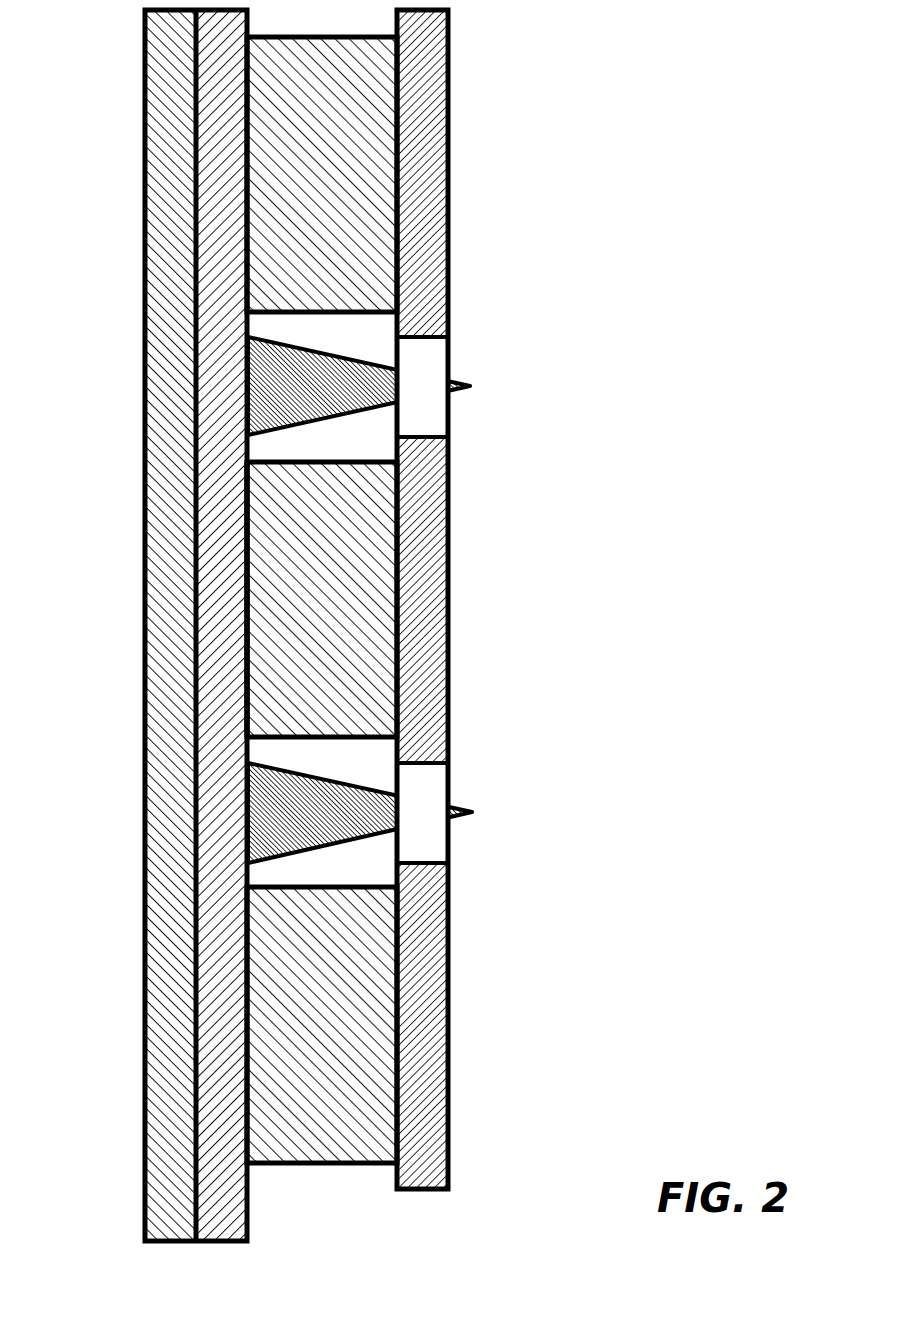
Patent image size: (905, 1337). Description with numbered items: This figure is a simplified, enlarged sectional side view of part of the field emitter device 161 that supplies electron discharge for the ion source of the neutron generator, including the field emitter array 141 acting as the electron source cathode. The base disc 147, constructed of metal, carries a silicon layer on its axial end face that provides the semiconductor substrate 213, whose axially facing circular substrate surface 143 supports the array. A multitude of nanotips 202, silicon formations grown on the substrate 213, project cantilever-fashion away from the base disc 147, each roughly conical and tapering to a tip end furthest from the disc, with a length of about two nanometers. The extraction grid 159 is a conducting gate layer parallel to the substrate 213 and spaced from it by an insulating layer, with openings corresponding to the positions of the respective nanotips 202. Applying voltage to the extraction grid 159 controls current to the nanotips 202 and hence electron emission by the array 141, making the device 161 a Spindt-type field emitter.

The field emitter array 141 is at (690, 584).
The substrate surface 143 is at (266, 549).
The base disc 147 is at (170, 1206).
The extraction grid 159 is at (432, 672).
The field emitter device 161 is at (708, 132).
The nanotips 202 is at (335, 377).
The semiconductor substrate 213 is at (227, 522).